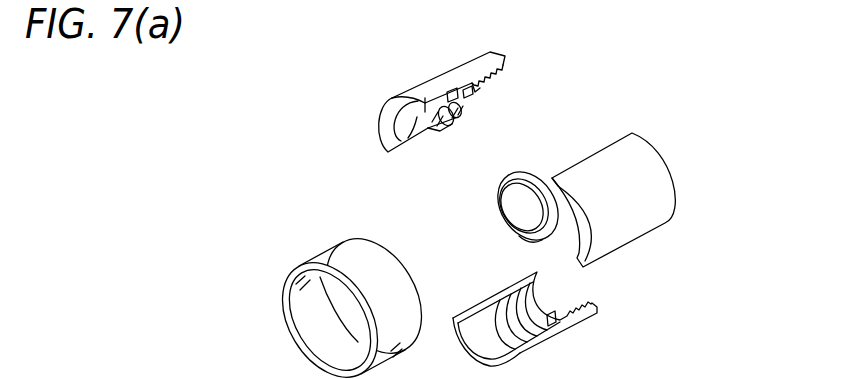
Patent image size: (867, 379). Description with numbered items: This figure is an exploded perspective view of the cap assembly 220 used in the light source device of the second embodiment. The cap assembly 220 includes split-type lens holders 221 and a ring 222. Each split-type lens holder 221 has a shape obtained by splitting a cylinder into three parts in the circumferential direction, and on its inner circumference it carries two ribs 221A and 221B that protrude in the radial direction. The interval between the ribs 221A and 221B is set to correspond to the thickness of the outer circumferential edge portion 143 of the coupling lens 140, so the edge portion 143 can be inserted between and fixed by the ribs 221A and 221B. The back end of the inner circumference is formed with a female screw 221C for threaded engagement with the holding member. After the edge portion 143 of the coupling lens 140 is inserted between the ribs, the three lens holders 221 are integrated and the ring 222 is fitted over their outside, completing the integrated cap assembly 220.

The cap assembly 220 is at (630, 72).
The split-type lens holder 221 is at (538, 196).
The rib 221A is at (413, 147).
The rib 221B is at (453, 128).
The female screw 221C is at (497, 74).
The coupling lens 140 is at (512, 173).
The outer circumferential edge portion 143 is at (530, 240).
The ring 222 is at (283, 313).